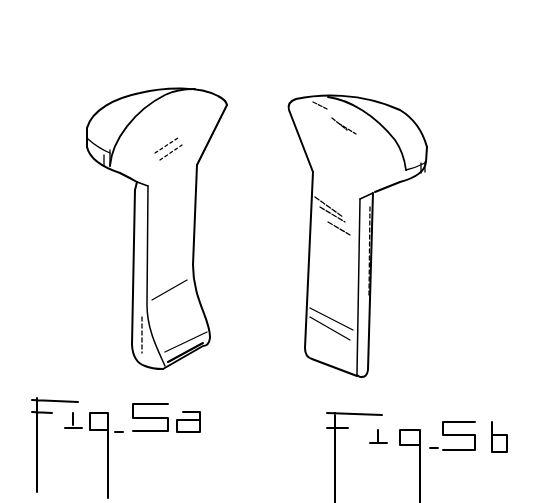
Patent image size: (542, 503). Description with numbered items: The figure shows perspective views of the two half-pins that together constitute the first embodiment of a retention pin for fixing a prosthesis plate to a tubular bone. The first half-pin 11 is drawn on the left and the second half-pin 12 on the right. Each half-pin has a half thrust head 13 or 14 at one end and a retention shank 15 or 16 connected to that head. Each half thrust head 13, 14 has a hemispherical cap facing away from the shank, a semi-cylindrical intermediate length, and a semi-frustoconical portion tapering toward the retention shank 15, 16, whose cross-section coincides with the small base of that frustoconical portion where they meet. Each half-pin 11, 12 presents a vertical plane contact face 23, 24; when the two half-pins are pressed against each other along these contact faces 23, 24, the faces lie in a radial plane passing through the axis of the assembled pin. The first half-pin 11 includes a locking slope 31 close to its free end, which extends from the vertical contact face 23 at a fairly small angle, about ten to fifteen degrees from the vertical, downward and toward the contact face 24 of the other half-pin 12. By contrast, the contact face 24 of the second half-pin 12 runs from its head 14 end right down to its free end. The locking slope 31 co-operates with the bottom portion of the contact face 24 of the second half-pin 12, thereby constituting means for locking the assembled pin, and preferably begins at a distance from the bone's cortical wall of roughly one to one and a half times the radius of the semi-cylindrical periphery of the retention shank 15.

In FIG. 5a, the first half-pin 11 is at (158, 203).
In FIG. 5b, the second half-pin 12 is at (353, 219).
In FIG. 5a, the half thrust head 13 is at (138, 100).
In FIG. 5b, the half thrust head 14 is at (383, 115).
In FIG. 5a, the retention shank 15 is at (138, 195).
In FIG. 5b, the retention shank 16 is at (372, 220).
In FIG. 5a, the vertical plane contact face 23 is at (192, 183).
In FIG. 5b, the vertical plane contact face 24 is at (322, 208).
In FIG. 5a, the locking slope 31 is at (187, 313).